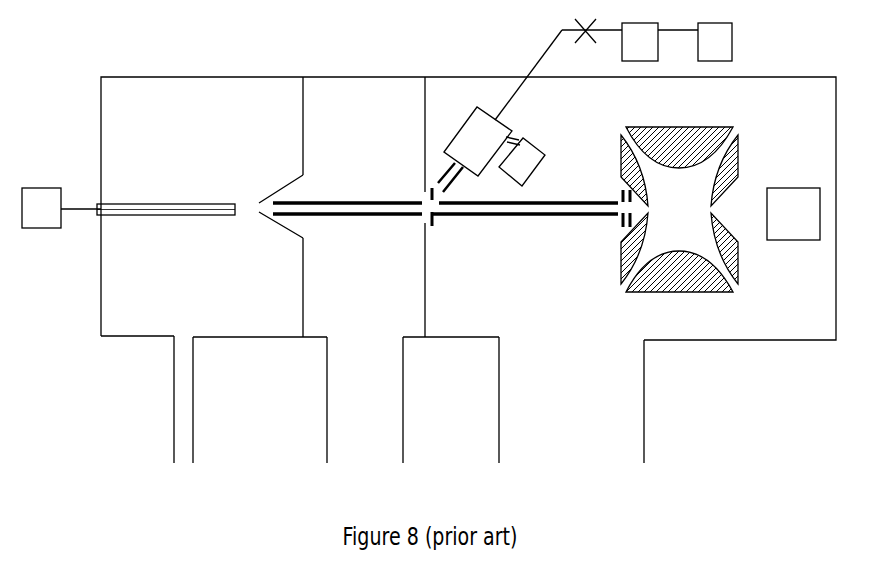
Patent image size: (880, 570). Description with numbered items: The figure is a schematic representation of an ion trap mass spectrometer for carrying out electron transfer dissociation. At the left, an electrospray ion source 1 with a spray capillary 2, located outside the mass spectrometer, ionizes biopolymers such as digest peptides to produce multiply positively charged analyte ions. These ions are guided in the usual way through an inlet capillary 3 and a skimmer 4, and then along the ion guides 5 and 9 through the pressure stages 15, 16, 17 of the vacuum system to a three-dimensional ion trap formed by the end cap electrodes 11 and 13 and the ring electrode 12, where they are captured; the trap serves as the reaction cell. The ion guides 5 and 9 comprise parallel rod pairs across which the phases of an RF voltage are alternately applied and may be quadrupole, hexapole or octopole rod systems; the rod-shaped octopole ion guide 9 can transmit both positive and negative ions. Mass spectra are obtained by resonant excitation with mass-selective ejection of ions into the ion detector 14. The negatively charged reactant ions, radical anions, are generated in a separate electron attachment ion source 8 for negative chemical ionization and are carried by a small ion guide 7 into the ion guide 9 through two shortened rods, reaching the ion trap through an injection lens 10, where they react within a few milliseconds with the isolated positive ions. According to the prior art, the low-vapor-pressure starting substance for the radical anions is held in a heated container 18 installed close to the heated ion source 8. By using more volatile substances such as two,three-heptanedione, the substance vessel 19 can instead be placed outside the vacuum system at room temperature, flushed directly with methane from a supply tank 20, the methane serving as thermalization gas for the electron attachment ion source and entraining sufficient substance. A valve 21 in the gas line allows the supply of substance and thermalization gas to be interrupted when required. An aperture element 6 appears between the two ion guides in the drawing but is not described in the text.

The electrospray ion source 1 is at (41, 208).
The spray capillary 2 is at (81, 196).
The inlet capillary 3 is at (166, 196).
The skimmer 4 is at (281, 204).
The ion guide 5 is at (347, 195).
The aperture lens 6 is at (438, 220).
The small ion guide 7 is at (447, 176).
The electron attachment ion source 8 is at (503, 103).
The ion guide 9 is at (525, 224).
The injection lens 10 is at (608, 200).
The end cap electrode 11 is at (661, 213).
The ring electrode 12 is at (679, 135).
The end cap electrode 13 is at (740, 209).
The ion detector 14 is at (793, 214).
The pressure stage 15 is at (180, 385).
The pressure stage 16 is at (365, 400).
The pressure stage 17 is at (571, 400).
The heated container 18 is at (522, 161).
The substance vessel 19 is at (610, 42).
The supply tank 20 is at (695, 42).
The valve 21 is at (585, 46).